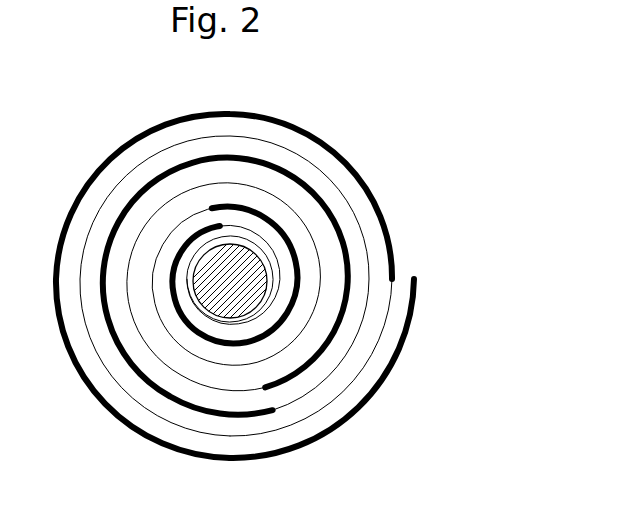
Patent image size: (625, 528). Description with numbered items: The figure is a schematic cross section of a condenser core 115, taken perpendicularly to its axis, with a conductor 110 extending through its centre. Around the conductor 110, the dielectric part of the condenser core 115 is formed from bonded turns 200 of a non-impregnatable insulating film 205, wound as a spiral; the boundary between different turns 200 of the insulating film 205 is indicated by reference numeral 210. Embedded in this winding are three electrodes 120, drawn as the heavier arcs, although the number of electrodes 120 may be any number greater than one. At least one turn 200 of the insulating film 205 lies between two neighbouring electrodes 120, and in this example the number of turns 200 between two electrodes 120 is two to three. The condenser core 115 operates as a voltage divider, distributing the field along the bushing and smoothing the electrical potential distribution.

The conductor 110 is at (232, 274).
The condenser core 115 is at (80, 461).
The electrode 120 is at (388, 237).
The turn 200 is at (395, 332).
The non-impregnatable insulating film 205 is at (363, 387).
The boundary between different turns 210 is at (345, 198).